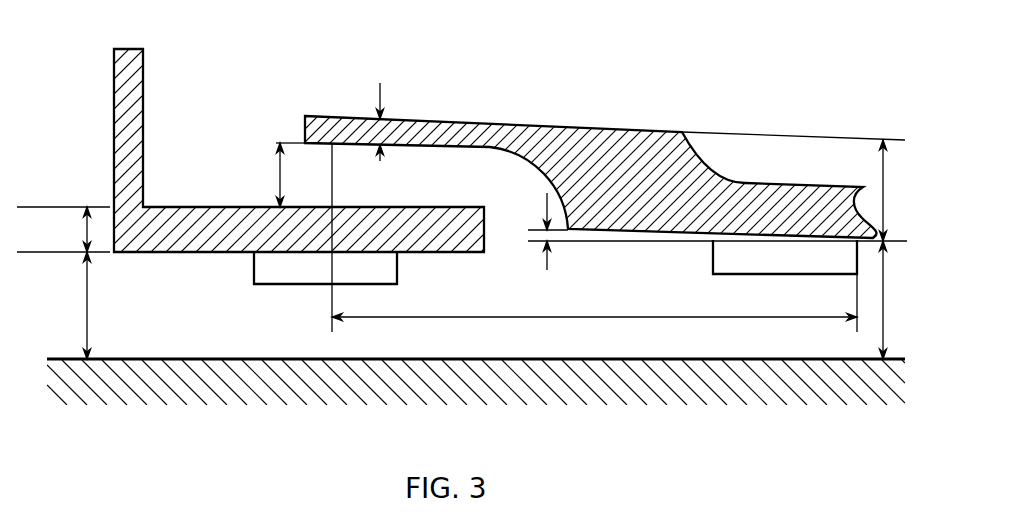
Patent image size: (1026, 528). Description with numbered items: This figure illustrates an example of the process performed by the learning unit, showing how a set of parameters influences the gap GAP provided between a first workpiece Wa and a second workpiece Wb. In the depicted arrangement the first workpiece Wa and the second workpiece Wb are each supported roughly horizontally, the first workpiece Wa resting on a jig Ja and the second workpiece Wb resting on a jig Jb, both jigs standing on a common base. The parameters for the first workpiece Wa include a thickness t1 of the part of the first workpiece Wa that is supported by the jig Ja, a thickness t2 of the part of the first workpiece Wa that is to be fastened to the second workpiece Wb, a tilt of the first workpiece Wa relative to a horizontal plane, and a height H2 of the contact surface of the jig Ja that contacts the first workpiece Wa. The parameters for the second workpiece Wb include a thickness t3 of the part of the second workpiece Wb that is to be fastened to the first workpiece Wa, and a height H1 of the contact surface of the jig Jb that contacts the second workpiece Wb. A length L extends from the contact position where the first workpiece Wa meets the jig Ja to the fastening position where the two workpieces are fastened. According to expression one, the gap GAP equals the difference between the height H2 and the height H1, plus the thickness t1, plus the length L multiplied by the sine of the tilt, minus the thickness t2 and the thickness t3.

The first workpiece Wa is at (558, 117).
The second workpiece Wb is at (113, 156).
The jig Ja is at (713, 276).
The jig Jb is at (254, 284).
The thickness of a part of the first workpiece supported by the jig t1 is at (896, 190).
The thickness of a part of the first workpiece to be fastened t2 is at (368, 121).
The thickness of a part of the second workpiece to be fastened t3 is at (63, 229).
The height of a contact surface of the jig Jb H1 is at (71, 305).
The height of a contact surface of the jig Ja H2 is at (900, 300).
The gap GAP is at (258, 175).
The length from the contact position to the fastening position L is at (594, 237).